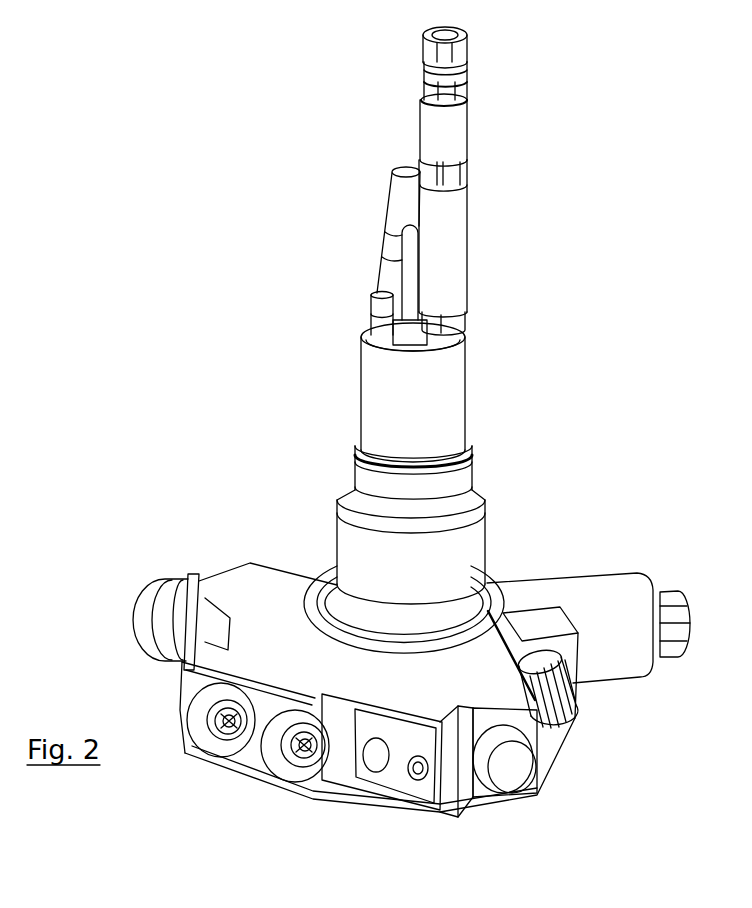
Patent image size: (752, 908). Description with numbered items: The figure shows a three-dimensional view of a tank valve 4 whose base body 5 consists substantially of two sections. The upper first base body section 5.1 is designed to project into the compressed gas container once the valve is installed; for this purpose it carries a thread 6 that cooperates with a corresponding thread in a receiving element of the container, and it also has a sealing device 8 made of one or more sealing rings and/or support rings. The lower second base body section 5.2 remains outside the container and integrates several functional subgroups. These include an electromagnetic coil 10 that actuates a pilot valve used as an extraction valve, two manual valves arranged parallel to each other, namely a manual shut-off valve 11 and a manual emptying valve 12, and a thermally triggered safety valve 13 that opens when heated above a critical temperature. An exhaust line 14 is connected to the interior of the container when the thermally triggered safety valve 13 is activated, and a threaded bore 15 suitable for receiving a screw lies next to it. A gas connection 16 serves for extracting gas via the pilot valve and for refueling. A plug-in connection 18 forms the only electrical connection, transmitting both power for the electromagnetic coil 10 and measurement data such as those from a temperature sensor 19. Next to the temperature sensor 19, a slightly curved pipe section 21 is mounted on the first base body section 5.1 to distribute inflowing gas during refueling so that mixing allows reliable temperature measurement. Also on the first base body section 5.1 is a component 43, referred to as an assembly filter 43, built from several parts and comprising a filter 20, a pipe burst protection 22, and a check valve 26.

The tank valve 4 is at (523, 475).
The base body 5 is at (300, 560).
The first base body section 5.1 is at (437, 413).
The second base body section 5.2 is at (293, 633).
The thread 6 is at (470, 565).
The sealing device 8 is at (392, 462).
The electromagnetic coil 10 is at (627, 637).
The manual shut-off valve 11 is at (203, 738).
The manual emptying valve 12 is at (290, 772).
The thermally triggered safety valve 13 is at (500, 770).
The exhaust line 14 is at (390, 780).
The threaded bore 15 is at (427, 780).
The gas connection 16 is at (180, 612).
The plug-in connection 18 is at (578, 713).
The temperature sensor 19 is at (388, 221).
The filter 20 is at (432, 267).
The curved pipe section 21 is at (398, 225).
The pipe burst protection 22 is at (453, 72).
The check valve 26 is at (455, 117).
The assembly filter 43 is at (482, 140).